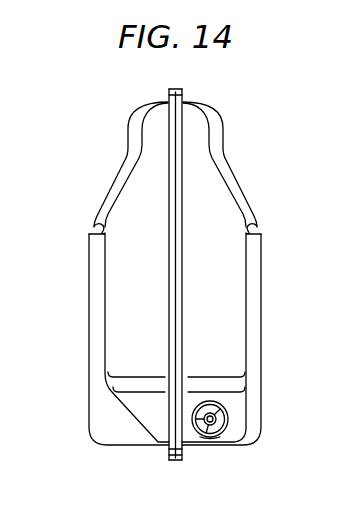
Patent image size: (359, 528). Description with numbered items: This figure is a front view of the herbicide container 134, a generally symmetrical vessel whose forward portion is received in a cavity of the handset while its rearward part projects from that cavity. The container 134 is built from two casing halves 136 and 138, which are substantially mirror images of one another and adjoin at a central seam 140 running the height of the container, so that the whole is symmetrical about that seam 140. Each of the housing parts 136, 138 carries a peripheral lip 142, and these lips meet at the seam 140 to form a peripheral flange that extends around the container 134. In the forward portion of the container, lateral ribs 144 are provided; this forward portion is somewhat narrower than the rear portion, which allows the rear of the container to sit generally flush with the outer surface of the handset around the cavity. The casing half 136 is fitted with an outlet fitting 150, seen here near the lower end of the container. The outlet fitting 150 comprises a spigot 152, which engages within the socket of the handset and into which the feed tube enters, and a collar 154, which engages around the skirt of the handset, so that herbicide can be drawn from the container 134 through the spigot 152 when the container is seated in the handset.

The container 134 is at (249, 171).
The casing half 136 is at (233, 315).
The casing half 138 is at (98, 307).
The seam 140 is at (179, 89).
The peripheral lip 142 is at (179, 270).
The lateral ribs 144 is at (94, 226).
The outlet fitting 150 is at (216, 431).
The spigot 152 is at (220, 421).
The collar 154 is at (204, 437).